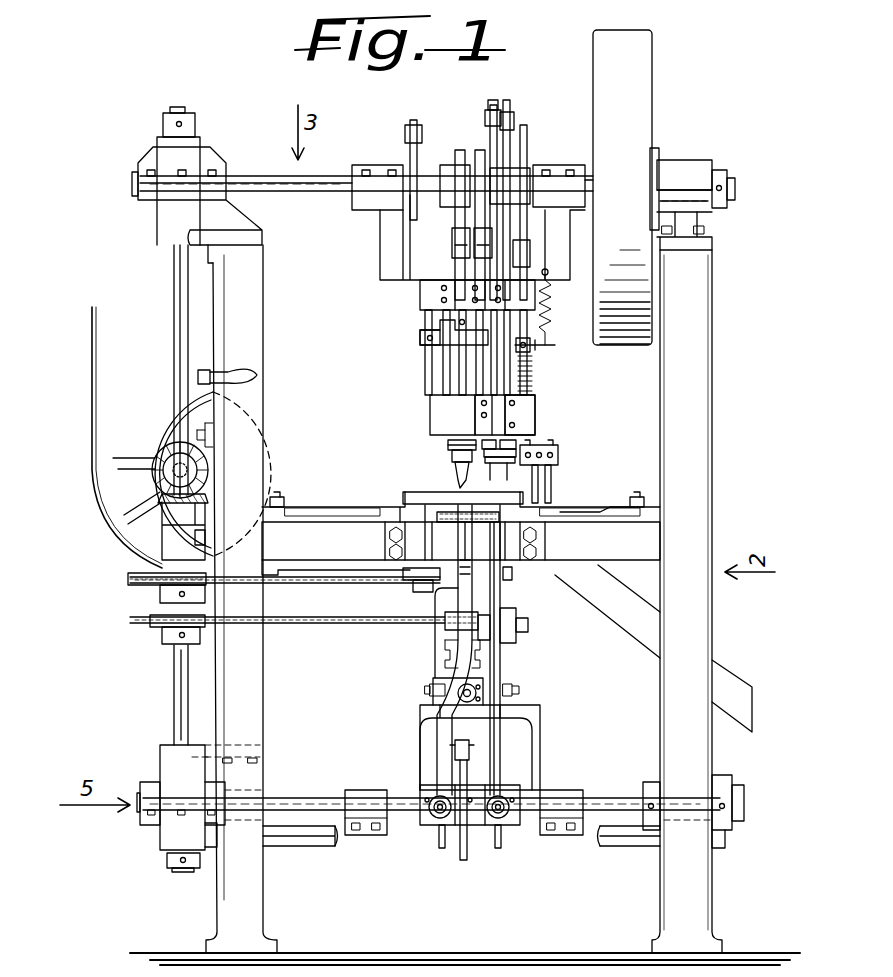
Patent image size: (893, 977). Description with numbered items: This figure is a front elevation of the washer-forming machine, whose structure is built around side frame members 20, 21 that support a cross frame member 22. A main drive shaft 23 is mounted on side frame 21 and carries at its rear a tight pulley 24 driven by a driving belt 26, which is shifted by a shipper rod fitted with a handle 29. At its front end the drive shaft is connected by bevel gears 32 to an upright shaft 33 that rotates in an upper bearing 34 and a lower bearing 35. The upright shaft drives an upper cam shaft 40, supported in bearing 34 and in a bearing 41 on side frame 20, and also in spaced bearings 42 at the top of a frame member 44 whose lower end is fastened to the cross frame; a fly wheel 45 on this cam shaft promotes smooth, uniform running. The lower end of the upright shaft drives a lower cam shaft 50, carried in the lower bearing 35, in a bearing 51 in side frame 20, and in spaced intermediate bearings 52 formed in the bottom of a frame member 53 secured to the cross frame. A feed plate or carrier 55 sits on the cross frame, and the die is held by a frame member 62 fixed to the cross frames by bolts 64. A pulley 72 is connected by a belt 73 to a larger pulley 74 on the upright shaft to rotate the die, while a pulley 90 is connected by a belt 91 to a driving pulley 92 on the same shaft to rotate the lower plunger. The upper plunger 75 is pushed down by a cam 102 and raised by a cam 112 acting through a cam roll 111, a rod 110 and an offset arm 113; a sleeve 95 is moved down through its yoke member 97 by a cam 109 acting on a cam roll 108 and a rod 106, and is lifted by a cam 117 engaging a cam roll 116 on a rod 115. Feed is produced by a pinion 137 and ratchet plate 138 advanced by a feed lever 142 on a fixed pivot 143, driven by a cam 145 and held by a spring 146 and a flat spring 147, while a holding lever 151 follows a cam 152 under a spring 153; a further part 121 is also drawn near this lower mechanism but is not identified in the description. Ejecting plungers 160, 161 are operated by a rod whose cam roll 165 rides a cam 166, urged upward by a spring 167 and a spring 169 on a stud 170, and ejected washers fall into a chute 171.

The side frame member 20 is at (672, 411).
The side frame member 21 is at (252, 322).
The cross frame member 22 is at (322, 535).
The main drive shaft 23 is at (178, 472).
The tight pulley 24 is at (135, 403).
The driving belt 26 is at (104, 360).
The handle 29 is at (257, 377).
The bevel gears 32 is at (160, 456).
The upright shaft 33 is at (176, 292).
The upper bearing 34 is at (157, 232).
The lower bearing 35 is at (160, 752).
The upper cam shaft 40 is at (305, 193).
The bearing 41 is at (692, 168).
The spaced bearings 42 is at (367, 170).
The frame member 44 is at (445, 386).
The fly wheel 45 is at (645, 80).
The lower cam shaft 50 is at (294, 798).
The bearing 51 is at (655, 782).
The spaced intermediate bearings 52 is at (380, 835).
The frame member 53 is at (435, 666).
The feed plate or carrier 55 is at (415, 488).
The frame member 62 is at (594, 510).
The bolts 64 is at (282, 496).
The pulley 72 is at (418, 586).
The belt 73 is at (333, 583).
The larger pulley 74 is at (145, 585).
The plunger 75 is at (470, 395).
The pulley 90 is at (445, 630).
The belt 91 is at (352, 623).
The driving pulley 92 is at (160, 628).
The sleeve 95 is at (470, 480).
The yoke member 97 is at (498, 460).
The cam 102 is at (455, 160).
The rod 106 is at (491, 415).
The cam roll 108 is at (452, 244).
The cam 109 is at (479, 150).
The rod 110 is at (425, 322).
The cam roll 111 is at (412, 120).
The cam 112 is at (400, 212).
The offset arm 113 is at (430, 347).
The rod 115 is at (518, 420).
The cam roll 116 is at (500, 113).
The cam 117 is at (512, 135).
The rod 121 is at (462, 861).
The pinion 137 is at (462, 531).
The ratchet plate 138 is at (452, 528).
The feed lever 142 is at (501, 600).
The fixed pivot 143 is at (528, 626).
The cam 145 is at (500, 848).
The spring 146 is at (519, 688).
The flat spring 147 is at (512, 574).
The holding lever 151 is at (438, 758).
The cam 152 is at (440, 848).
The spring 153 is at (425, 690).
The ejecting plunger 160 is at (552, 470).
The ejecting plunger 161 is at (551, 489).
The cam roll 165 is at (530, 250).
The cam 166 is at (528, 132).
The spring 167 is at (534, 378).
The spring 169 is at (547, 310).
The stud 170 is at (552, 350).
The chute 171 is at (632, 635).